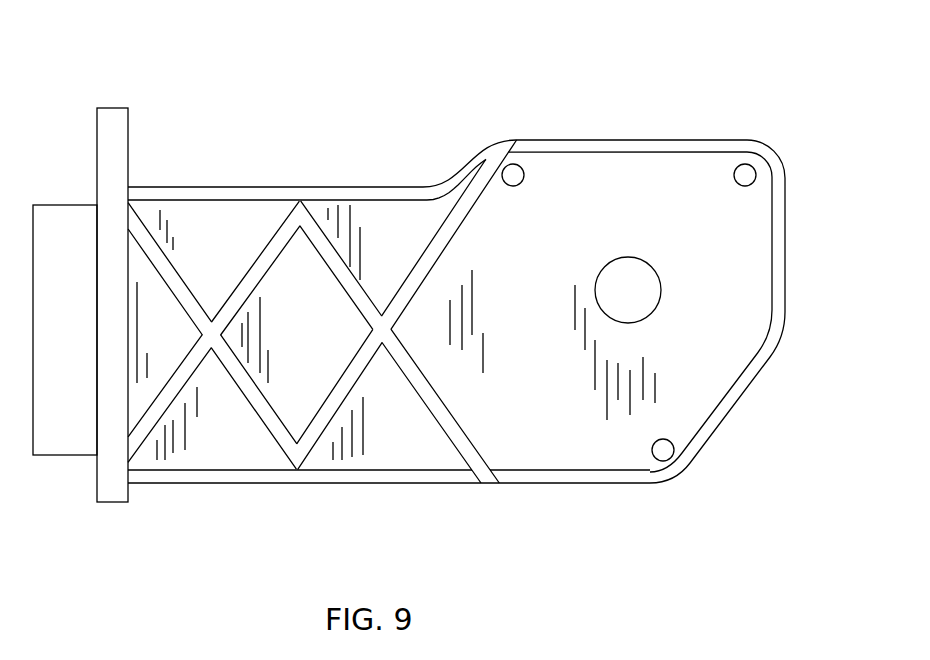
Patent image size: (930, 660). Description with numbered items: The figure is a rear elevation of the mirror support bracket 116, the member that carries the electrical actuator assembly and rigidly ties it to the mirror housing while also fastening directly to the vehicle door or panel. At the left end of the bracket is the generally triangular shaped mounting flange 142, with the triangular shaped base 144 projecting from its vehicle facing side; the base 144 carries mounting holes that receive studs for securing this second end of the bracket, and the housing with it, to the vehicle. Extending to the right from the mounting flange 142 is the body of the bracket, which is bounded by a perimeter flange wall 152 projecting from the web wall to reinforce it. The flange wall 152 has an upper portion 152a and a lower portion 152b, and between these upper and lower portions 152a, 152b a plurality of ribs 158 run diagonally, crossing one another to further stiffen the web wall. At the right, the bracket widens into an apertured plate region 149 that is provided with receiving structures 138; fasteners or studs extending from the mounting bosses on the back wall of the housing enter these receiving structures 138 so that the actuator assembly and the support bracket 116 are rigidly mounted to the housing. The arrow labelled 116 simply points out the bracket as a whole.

The support bracket 116 is at (306, 120).
The receiving structures 138 is at (518, 172).
The mounting flange 142 is at (113, 113).
The base 144 is at (63, 215).
The mounting plate 149 is at (552, 462).
The flange wall 152 is at (389, 330).
The upper portion of flange wall 152a is at (177, 187).
The lower portion of flange wall 152b is at (192, 477).
The ribs 158 is at (222, 302).